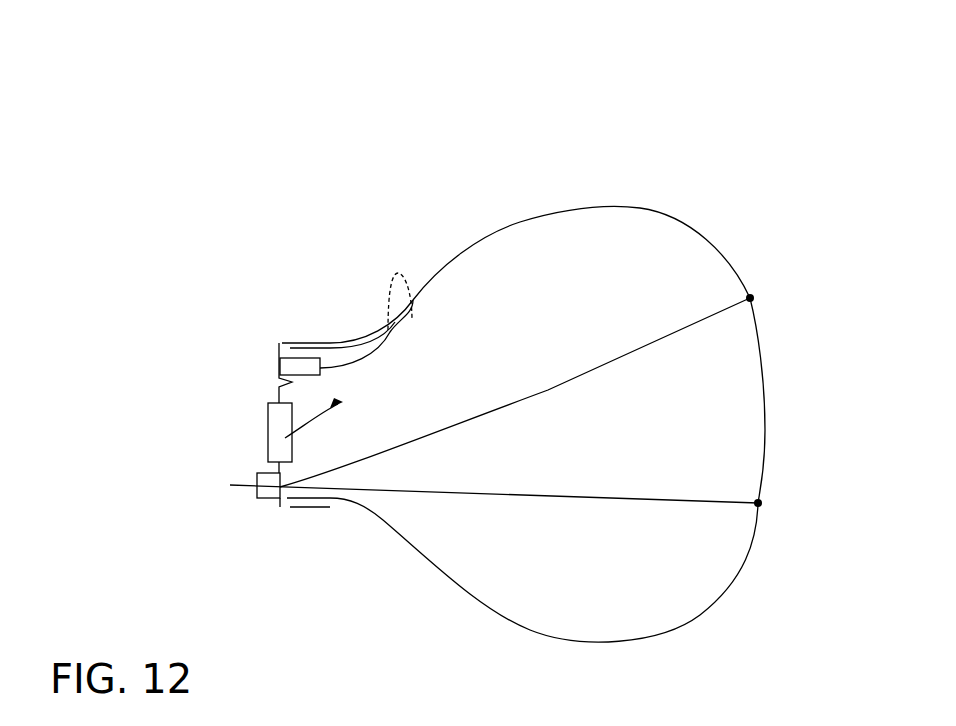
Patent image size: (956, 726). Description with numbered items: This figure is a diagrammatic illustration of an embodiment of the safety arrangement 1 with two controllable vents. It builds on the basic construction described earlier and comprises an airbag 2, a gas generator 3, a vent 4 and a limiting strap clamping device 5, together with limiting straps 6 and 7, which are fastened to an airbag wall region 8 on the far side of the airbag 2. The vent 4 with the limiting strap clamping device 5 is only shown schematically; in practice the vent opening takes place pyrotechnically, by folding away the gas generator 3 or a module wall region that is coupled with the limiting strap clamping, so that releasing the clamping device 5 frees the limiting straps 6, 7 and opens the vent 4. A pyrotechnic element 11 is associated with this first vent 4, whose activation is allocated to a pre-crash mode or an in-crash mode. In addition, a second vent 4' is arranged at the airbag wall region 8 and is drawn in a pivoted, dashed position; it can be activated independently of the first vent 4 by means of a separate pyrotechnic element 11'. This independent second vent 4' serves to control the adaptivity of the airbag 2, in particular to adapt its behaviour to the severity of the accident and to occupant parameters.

The safety arrangement 1 is at (630, 128).
The airbag 2 is at (663, 247).
The gas generator 3 is at (277, 417).
The vent 4 is at (231, 425).
The second vent 4' is at (347, 271).
The limiting strap clamping device 5 is at (290, 503).
The limiting strap 6 is at (437, 493).
The limiting strap 7 is at (548, 390).
The airbag wall region 8 is at (762, 377).
The pyrotechnic element 11 is at (239, 545).
The pyrotechnic element 11' is at (258, 306).